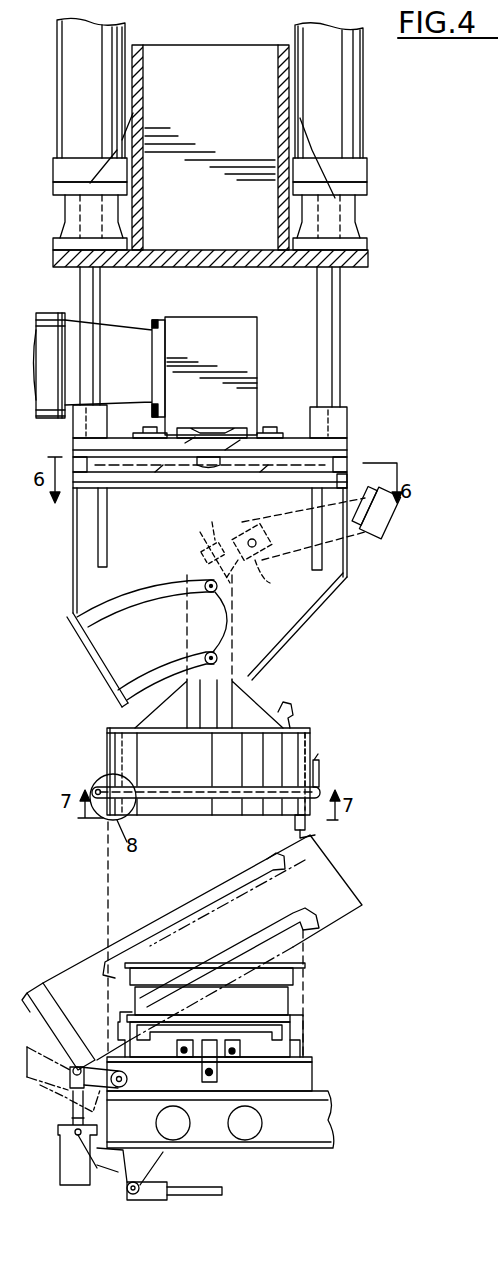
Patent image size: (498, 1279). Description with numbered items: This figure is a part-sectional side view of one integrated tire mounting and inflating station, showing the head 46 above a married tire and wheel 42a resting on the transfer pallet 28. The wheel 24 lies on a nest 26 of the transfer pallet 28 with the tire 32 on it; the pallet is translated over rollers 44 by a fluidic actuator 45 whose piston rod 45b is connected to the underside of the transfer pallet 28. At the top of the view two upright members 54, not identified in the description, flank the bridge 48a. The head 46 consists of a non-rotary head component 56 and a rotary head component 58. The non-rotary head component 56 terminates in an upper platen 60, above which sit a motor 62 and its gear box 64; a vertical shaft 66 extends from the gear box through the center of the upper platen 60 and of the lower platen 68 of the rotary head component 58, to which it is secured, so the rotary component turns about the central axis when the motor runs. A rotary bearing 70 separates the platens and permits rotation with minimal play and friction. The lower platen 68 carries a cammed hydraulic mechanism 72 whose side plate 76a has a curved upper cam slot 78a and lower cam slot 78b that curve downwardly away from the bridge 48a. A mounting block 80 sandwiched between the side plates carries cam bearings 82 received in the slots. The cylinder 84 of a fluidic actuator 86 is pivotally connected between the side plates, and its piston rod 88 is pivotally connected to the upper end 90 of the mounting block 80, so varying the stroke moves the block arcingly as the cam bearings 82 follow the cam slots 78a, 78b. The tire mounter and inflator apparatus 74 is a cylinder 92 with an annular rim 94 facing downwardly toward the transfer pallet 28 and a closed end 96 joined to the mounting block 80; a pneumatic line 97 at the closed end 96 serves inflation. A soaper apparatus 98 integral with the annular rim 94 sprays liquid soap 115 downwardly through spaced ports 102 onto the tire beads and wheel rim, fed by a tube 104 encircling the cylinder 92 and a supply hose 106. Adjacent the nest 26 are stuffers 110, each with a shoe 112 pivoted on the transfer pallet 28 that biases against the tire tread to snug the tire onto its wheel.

The wheel 24 is at (298, 1022).
The nest 26 is at (315, 1060).
The transfer pallet 28 is at (315, 1084).
The tire 32 is at (355, 901).
The married tire and wheel 42a is at (368, 970).
The rollers 44 is at (230, 1117).
The fluidic actuator 45 is at (197, 1175).
The piston rod 45b is at (212, 1197).
The head 46 is at (403, 543).
The bridge 48a is at (211, 55).
The support posts 54 is at (120, 38).
The non-rotary head component 56 is at (307, 365).
The rotary head component 58 is at (237, 597).
The upper platen 60 is at (348, 442).
The motor 62 is at (48, 313).
The gear box 64 is at (232, 317).
The vertical shaft 66 is at (266, 417).
The lower platen 68 is at (348, 482).
The rotary bearing 70 is at (350, 470).
The cammed hydraulic mechanism 72 is at (310, 625).
The tire mounter and inflator apparatus 74 is at (340, 746).
The side plate 76a is at (348, 563).
The upper cam slot 78a is at (155, 584).
The lower cam slot 78b is at (142, 672).
The mounting block 80 is at (185, 621).
The cam bearings 82 is at (233, 614).
The cylinder 84 is at (251, 526).
The fluidic actuator 86 is at (279, 578).
The piston rod 88 is at (232, 535).
The upper end 90 is at (211, 547).
The cylinder 92 is at (313, 733).
The annular rim 94 is at (295, 826).
The closed end 96 is at (118, 728).
The pneumatic line 97 is at (290, 704).
The soaper apparatus 98 is at (95, 828).
The ports 102 is at (318, 838).
The tube 104 is at (324, 791).
The supply hose 106 is at (323, 770).
The stuffers 110 is at (45, 1112).
The shoe 112 is at (43, 982).
The liquid soap 115 is at (108, 912).